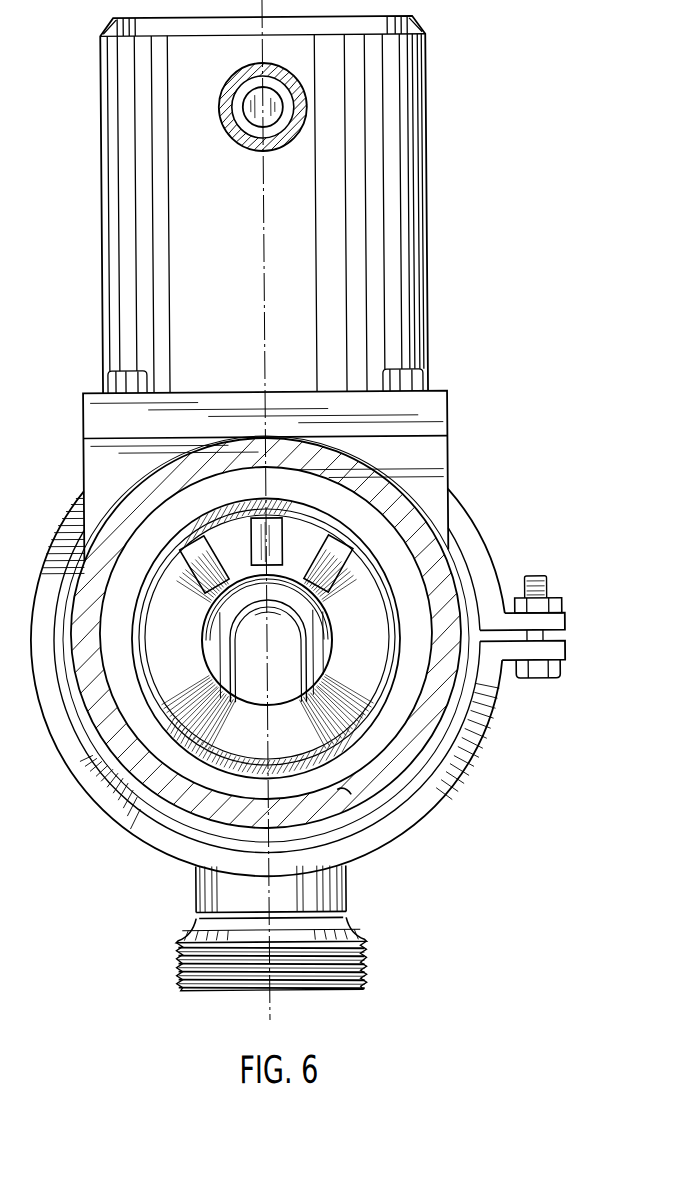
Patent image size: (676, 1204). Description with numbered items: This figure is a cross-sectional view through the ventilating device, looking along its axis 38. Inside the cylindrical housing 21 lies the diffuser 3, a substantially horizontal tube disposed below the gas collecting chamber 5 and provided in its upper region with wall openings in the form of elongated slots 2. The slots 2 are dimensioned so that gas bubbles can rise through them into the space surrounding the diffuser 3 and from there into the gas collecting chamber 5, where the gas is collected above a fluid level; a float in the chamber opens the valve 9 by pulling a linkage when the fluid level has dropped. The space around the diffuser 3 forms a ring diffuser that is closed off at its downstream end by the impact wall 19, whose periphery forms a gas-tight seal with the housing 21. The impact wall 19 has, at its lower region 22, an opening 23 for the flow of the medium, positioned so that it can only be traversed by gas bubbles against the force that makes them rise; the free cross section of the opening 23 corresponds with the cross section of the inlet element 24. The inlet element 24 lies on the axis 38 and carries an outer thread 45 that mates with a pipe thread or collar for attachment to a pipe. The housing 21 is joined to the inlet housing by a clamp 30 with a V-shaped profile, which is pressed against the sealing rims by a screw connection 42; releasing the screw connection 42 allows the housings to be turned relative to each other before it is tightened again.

The elongated slots 2 is at (347, 556).
The diffuser 3 is at (379, 677).
The gas collecting chamber 5 is at (415, 184).
The valve 9 is at (296, 96).
The impact wall 19 is at (143, 678).
The housing 21 is at (436, 463).
The lower region 22 is at (364, 762).
The opening 23 is at (341, 785).
The inlet element 24 is at (233, 992).
The clamp 30 is at (484, 561).
The axis 38 is at (275, 997).
The screw connection 42 is at (560, 606).
The outer thread 45 is at (178, 956).